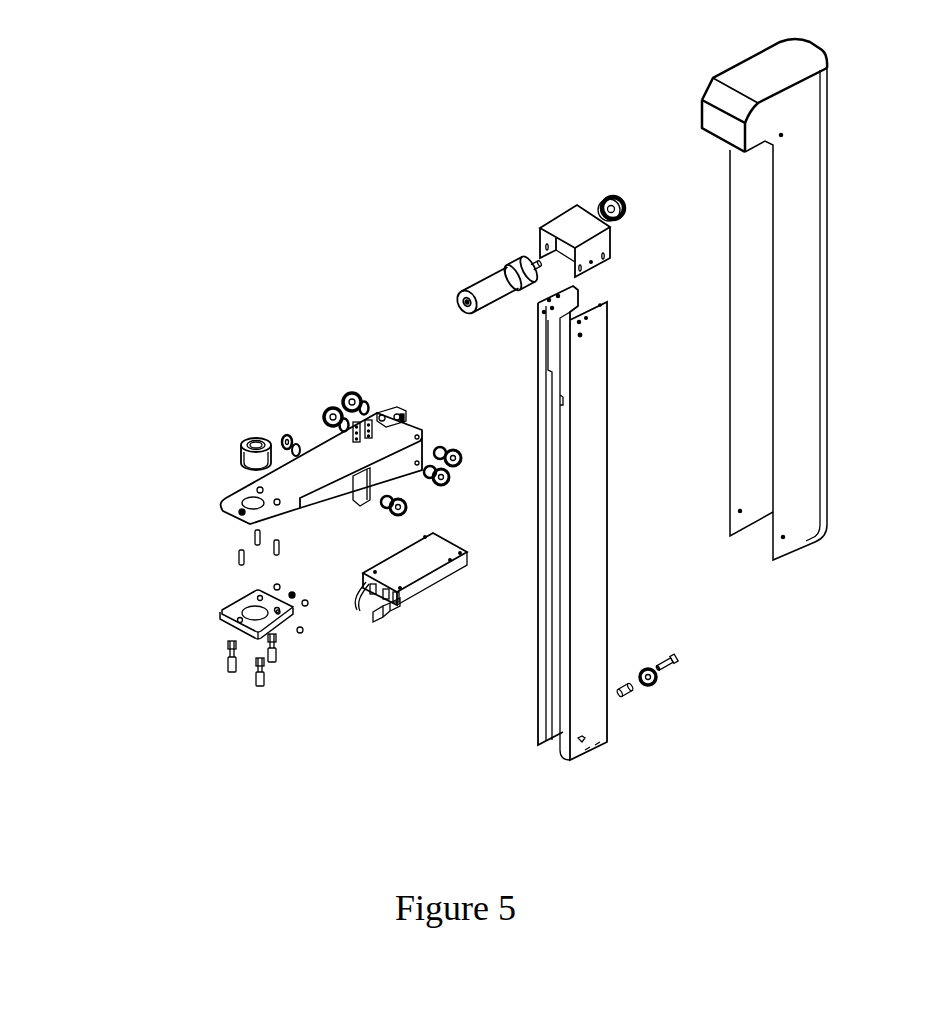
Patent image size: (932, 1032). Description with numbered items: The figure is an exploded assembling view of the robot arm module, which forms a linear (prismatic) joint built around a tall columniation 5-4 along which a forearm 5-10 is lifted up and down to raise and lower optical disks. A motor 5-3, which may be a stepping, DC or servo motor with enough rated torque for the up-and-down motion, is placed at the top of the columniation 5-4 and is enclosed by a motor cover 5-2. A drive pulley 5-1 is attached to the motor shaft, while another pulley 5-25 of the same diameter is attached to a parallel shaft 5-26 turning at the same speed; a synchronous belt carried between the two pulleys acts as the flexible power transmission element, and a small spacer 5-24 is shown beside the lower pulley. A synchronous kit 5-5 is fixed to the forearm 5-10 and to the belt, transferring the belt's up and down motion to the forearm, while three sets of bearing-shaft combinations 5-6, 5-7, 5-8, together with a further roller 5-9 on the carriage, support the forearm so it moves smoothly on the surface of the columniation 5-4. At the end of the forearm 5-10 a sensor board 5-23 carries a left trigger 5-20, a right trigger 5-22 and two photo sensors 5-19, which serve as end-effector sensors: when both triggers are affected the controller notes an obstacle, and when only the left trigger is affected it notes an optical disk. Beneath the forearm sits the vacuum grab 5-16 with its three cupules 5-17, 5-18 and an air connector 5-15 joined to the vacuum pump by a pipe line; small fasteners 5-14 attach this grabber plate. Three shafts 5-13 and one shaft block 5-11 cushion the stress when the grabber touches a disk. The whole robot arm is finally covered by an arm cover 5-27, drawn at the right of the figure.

The drive pulley 1 is at (613, 195).
The motor cover 2 is at (572, 230).
The motor 3 is at (497, 287).
The columniation 4 is at (542, 465).
The synchronous kit 5 is at (405, 414).
The bearing-shaft combination 6 is at (362, 390).
The bearing-shaft combination 7 is at (350, 393).
The bearing-shaft combination 8 is at (342, 395).
The roller 9 is at (323, 407).
The forearm 10 is at (347, 452).
The shaft block 11 is at (243, 462).
The shafts 13 is at (238, 553).
The screw 14 is at (274, 587).
The air connector 15 is at (220, 615).
The vacuum grab 16 is at (229, 648).
The cupules 17 is at (229, 667).
The cupules 18 is at (257, 683).
The photo sensors 19 is at (363, 588).
The left trigger 20 is at (369, 594).
The right trigger 22 is at (398, 608).
The sensor board 23 is at (437, 545).
The spacer 24 is at (629, 694).
The pulley 25 is at (650, 688).
The parallel shaft 26 is at (668, 670).
The arm cover 27 is at (802, 500).